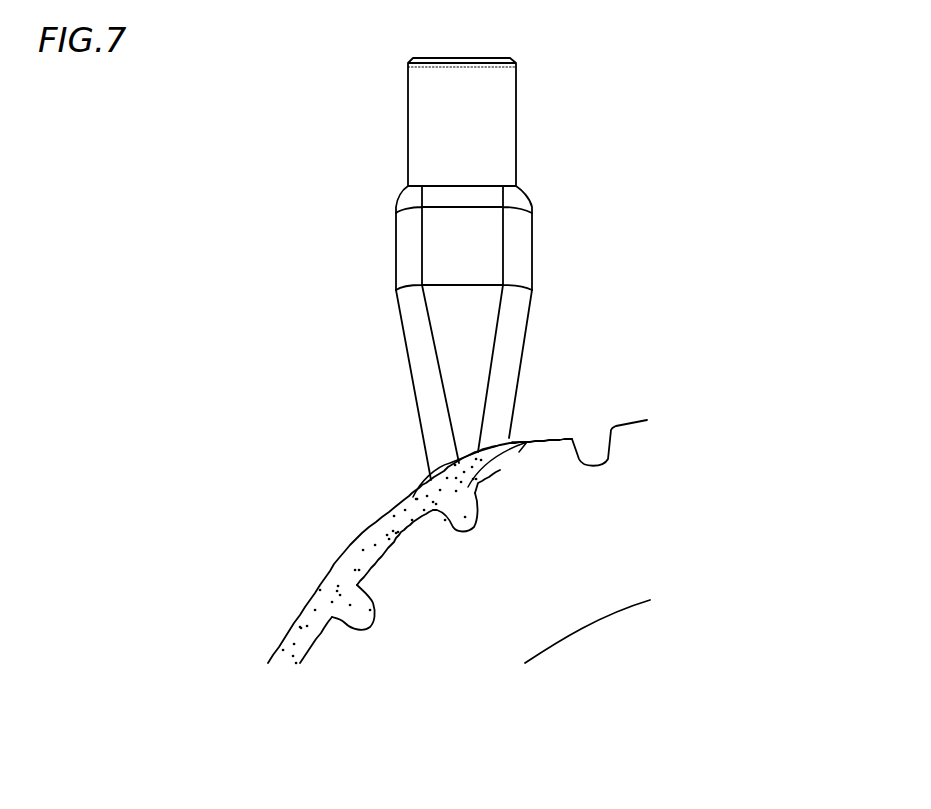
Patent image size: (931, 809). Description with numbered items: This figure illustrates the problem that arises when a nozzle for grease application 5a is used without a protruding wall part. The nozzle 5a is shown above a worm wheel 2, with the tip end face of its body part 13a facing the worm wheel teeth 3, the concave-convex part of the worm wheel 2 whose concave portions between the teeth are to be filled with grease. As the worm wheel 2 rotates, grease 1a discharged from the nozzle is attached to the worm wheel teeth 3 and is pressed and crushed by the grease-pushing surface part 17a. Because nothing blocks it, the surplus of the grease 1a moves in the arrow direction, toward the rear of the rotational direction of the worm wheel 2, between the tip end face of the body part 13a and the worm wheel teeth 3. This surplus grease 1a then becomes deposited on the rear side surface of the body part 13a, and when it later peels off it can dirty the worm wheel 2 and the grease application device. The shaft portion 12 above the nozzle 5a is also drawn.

The shaft 12 is at (490, 130).
The nozzle for grease application 5a is at (365, 269).
The body part 13a is at (477, 312).
The grease-pushing surface part 17a is at (420, 492).
The grease 1a is at (320, 600).
The worm wheel teeth 3 is at (627, 420).
The worm wheel 2 is at (638, 502).